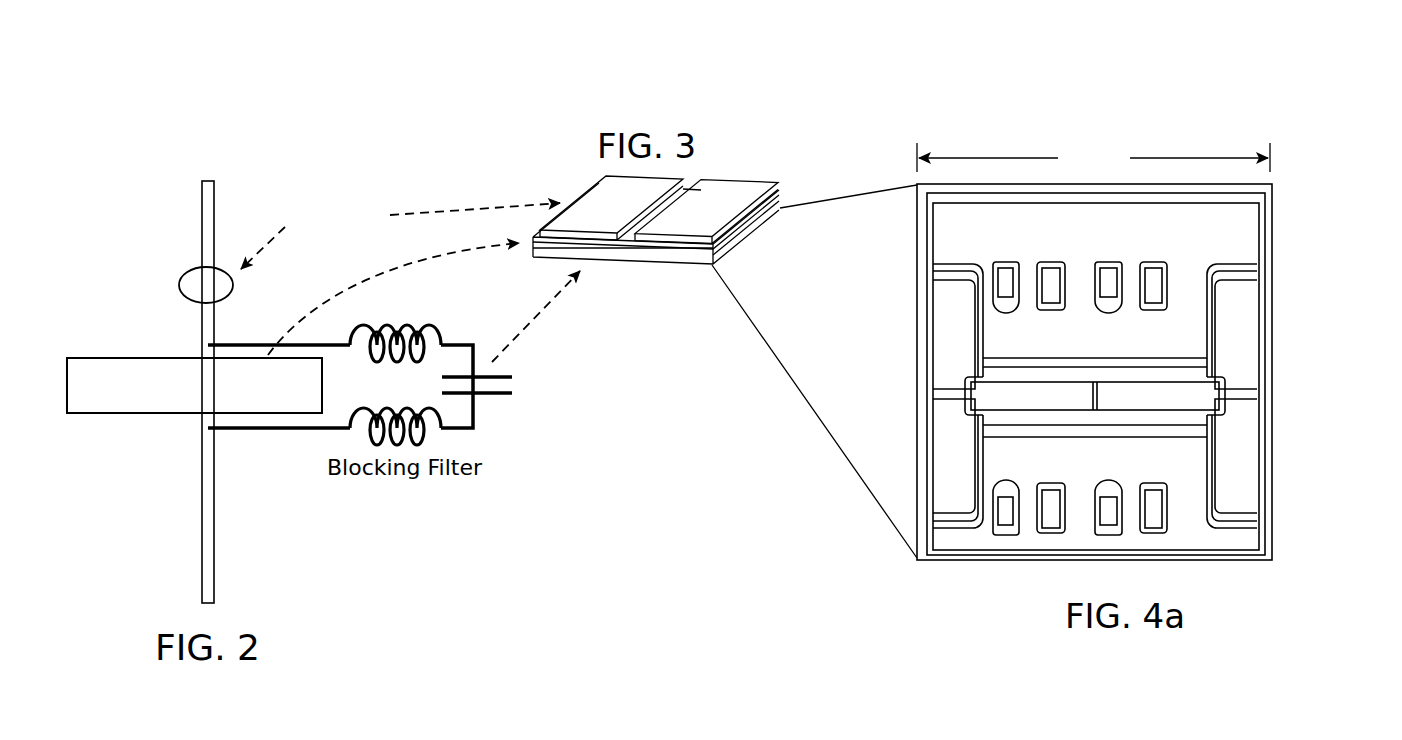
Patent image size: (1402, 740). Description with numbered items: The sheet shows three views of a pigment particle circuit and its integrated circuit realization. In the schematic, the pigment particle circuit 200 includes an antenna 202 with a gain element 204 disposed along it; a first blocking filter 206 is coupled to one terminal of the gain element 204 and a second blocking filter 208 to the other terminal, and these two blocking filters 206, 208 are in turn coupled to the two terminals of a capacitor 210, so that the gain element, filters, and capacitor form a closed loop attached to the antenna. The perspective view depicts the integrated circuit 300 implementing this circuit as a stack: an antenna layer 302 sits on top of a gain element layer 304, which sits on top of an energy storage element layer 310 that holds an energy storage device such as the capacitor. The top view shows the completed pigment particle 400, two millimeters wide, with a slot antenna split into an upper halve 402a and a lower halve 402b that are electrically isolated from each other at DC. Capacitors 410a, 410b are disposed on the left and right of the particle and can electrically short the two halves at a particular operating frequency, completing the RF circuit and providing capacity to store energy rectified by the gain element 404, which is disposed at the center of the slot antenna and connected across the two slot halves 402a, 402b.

In FIG. 2, the pigment particle circuit 200 is at (164, 181).
In FIG. 2, the antenna 202 is at (179, 285).
In FIG. 2, the gain element 204 is at (100, 413).
In FIG. 2, the first blocking filter 206 is at (367, 328).
In FIG. 2, the second blocking filter 208 is at (435, 413).
In FIG. 2, the capacitor 210 is at (505, 395).
In FIG. 3, the integrated circuit 300 is at (739, 92).
In FIG. 3, the antenna layer 302 is at (767, 180).
In FIG. 3, the gain element layer 304 is at (781, 200).
In FIG. 3, the energy storage element layer 310 is at (661, 262).
In FIG. 4A, the pigment particle 400 is at (1189, 93).
In FIG. 4A, the upper halve of slot antenna 402a is at (1080, 245).
In FIG. 4A, the lower halve of slot antenna 402b is at (1093, 472).
In FIG. 4A, the gain element 404 is at (1212, 402).
In FIG. 4A, the capacitor 410a is at (943, 303).
In FIG. 4A, the capacitor 410b is at (1247, 305).